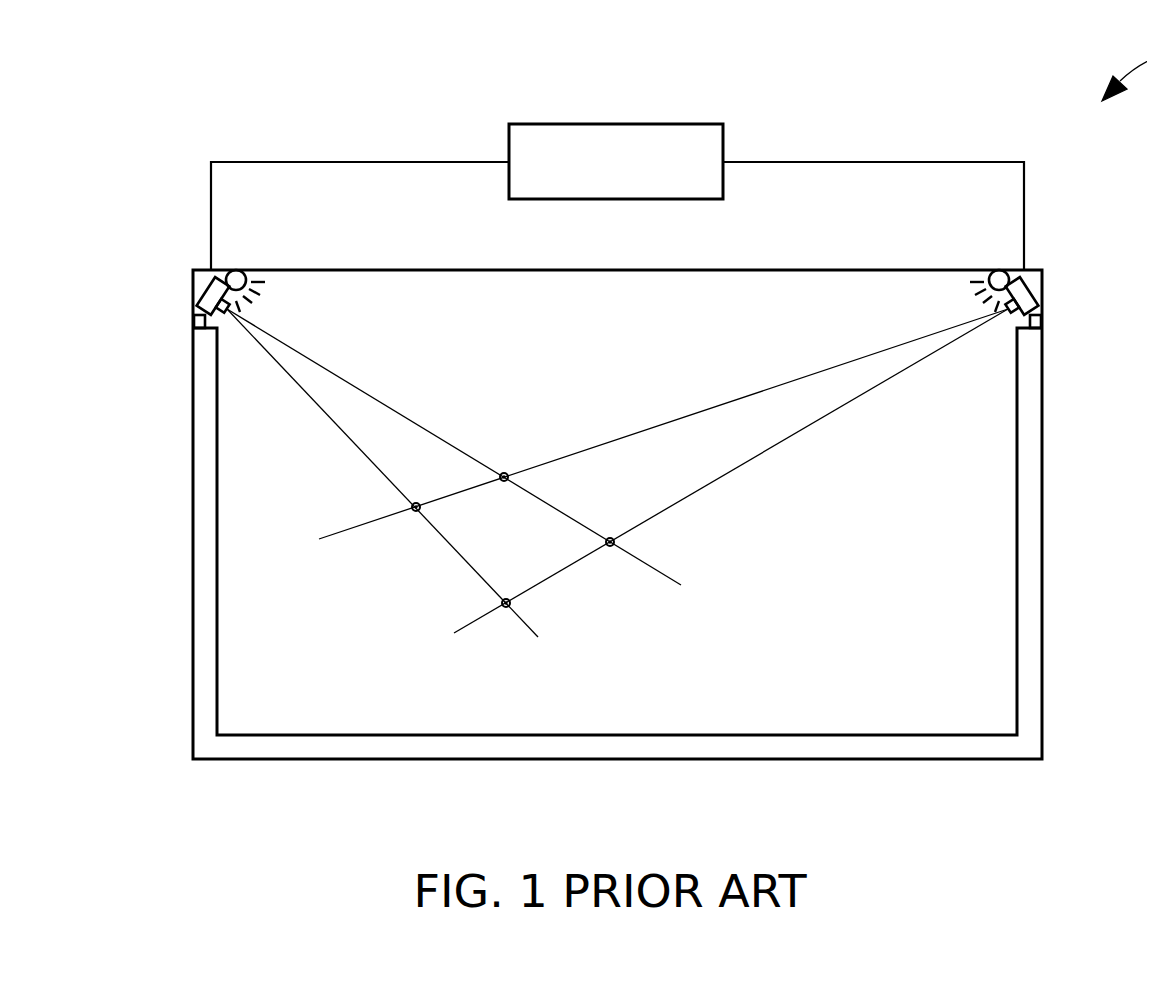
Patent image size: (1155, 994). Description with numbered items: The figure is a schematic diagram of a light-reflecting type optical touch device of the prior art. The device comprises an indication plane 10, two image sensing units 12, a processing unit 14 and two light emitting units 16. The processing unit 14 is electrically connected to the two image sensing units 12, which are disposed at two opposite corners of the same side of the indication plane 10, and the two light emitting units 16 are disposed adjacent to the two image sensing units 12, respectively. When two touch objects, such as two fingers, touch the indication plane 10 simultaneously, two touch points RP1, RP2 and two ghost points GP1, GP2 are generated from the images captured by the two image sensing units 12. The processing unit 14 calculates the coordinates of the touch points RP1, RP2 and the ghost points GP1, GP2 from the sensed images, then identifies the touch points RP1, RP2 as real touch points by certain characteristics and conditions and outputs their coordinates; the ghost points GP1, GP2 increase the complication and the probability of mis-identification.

The indication plane 10 is at (771, 261).
The image sensing unit 12 is at (205, 286).
The processing unit 14 is at (608, 116).
The light emitting unit 16 is at (229, 262).
The ghost point GP1 is at (495, 463).
The ghost point GP2 is at (498, 600).
The touch point RP1 is at (406, 504).
The touch point RP2 is at (602, 539).